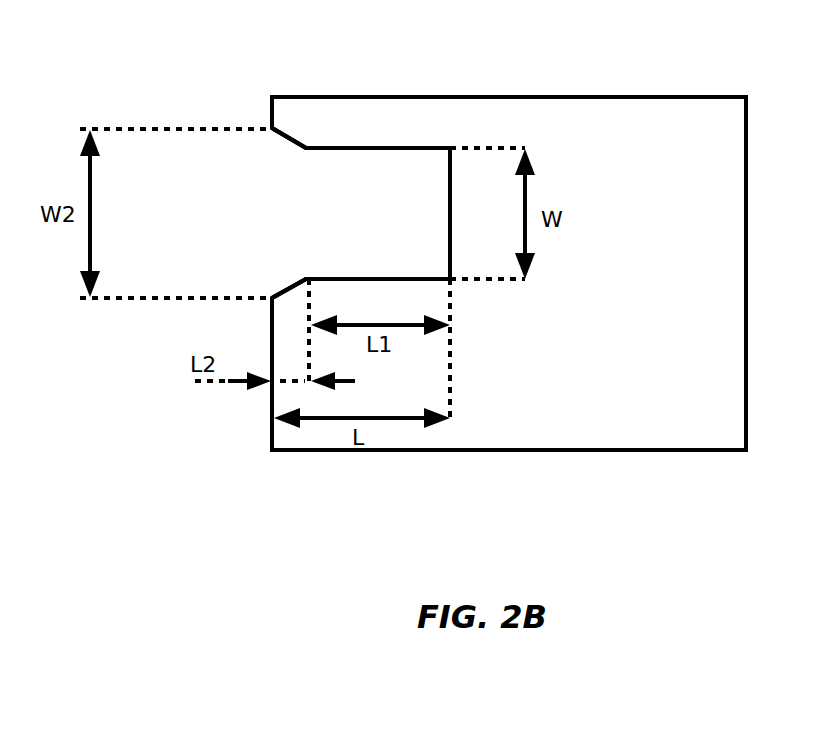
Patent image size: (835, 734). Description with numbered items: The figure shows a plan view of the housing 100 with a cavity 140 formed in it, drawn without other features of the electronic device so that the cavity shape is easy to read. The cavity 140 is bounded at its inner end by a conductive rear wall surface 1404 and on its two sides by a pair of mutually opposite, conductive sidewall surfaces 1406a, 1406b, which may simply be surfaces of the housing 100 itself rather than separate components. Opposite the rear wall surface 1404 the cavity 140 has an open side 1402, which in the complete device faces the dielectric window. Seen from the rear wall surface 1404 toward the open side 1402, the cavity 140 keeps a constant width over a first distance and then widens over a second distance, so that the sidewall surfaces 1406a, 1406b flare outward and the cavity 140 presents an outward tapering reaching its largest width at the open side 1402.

The housing 100 is at (658, 95).
The cavity 140 is at (337, 183).
The open side 1402 is at (256, 219).
The rear wall surface 1404 is at (447, 212).
The sidewall surface 1406a is at (373, 150).
The sidewall surface 1406b is at (320, 307).